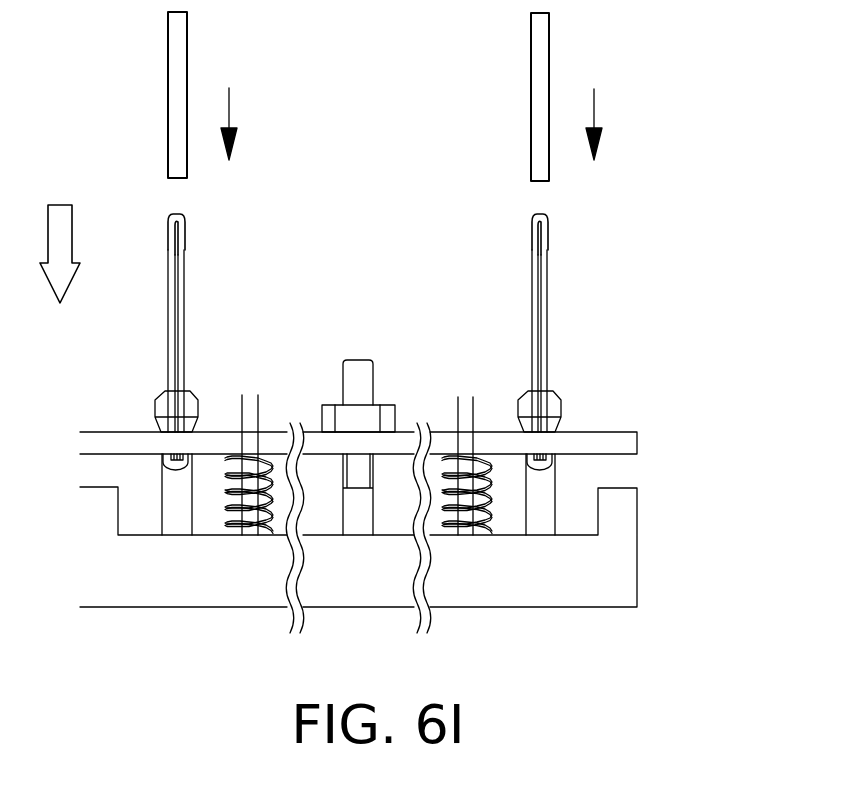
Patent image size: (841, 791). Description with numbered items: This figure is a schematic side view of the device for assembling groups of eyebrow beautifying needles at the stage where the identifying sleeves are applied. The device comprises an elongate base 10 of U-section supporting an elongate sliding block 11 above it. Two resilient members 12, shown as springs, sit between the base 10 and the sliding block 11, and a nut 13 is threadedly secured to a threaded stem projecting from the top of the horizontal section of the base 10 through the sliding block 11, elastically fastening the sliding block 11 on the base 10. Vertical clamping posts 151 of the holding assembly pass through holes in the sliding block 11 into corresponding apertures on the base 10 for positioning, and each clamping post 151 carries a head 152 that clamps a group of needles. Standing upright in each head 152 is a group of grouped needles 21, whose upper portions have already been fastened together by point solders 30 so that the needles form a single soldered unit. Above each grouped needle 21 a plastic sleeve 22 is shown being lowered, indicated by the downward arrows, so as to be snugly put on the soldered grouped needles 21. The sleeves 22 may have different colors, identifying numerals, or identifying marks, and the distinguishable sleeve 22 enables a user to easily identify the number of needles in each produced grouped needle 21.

The base 10 is at (625, 555).
The sliding block 11 is at (620, 445).
The resilient member 12 is at (230, 510).
The nut 13 is at (386, 410).
The clamping post 151 is at (542, 497).
The head 152 is at (147, 388).
The grouped needles 21 is at (182, 325).
The sleeve 22 is at (173, 62).
The point solder 30 is at (186, 218).